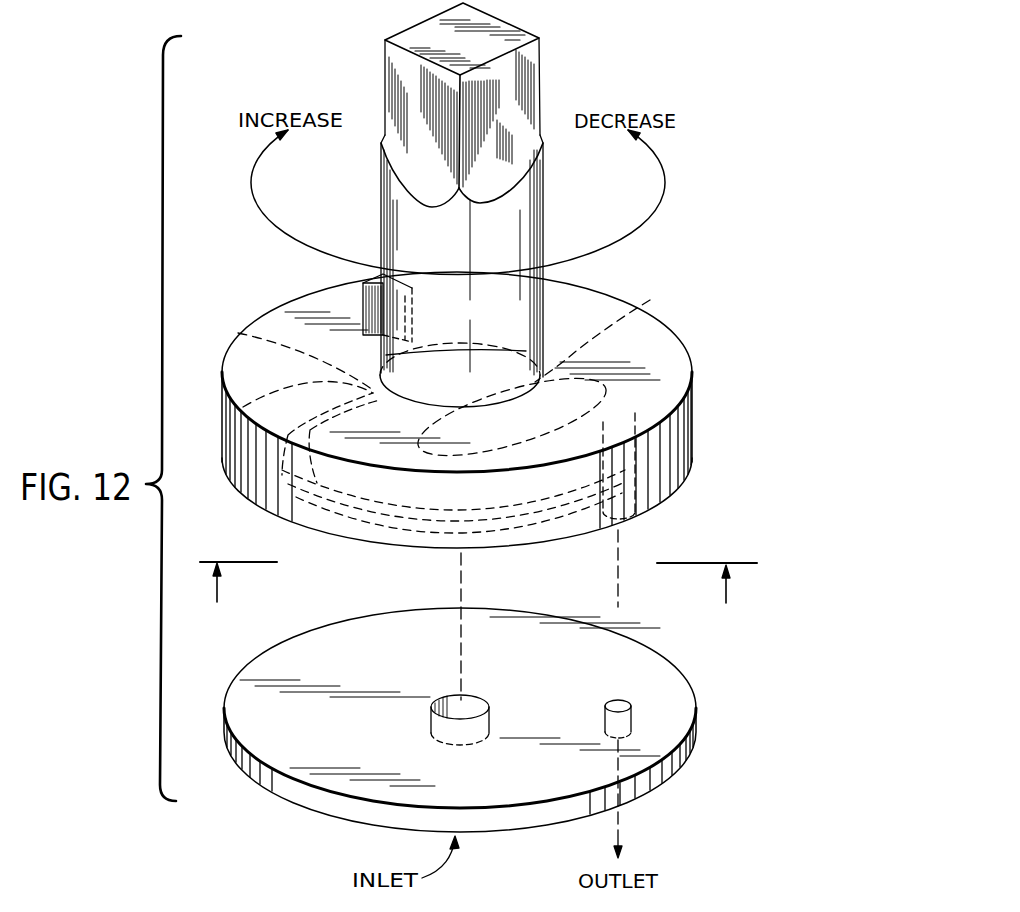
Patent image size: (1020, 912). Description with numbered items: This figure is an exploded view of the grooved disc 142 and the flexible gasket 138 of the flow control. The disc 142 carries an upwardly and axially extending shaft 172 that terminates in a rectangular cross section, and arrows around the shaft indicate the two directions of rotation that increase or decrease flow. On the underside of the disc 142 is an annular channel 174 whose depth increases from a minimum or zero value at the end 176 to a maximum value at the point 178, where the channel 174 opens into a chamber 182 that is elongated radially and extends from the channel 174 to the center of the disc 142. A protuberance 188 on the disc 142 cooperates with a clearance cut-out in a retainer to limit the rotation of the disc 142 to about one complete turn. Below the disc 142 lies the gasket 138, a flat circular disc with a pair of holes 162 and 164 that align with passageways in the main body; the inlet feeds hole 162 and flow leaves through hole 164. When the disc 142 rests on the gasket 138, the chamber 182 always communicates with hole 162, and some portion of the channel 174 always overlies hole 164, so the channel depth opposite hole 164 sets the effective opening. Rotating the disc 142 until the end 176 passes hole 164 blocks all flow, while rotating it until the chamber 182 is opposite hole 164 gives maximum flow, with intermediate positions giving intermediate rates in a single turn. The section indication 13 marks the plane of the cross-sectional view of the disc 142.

The shaft 172 is at (544, 193).
The protuberance 188 is at (360, 302).
The end of channel 176 is at (268, 332).
The chamber 182 is at (636, 306).
The point of maximum depth 178 is at (693, 386).
The disc 142 is at (700, 413).
The annular channel 174 is at (636, 517).
The section line 13- 13 is at (478, 599).
The flexible gasket 138 is at (700, 716).
The hole 162 is at (452, 697).
The hole 164 is at (623, 700).